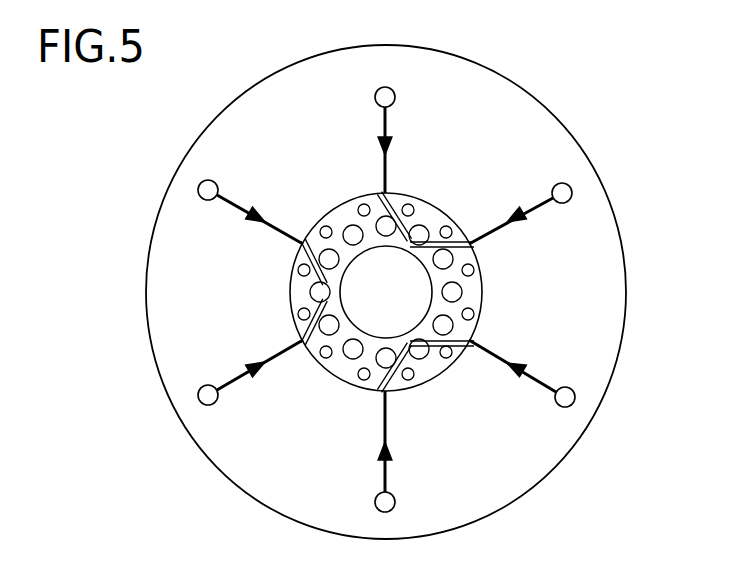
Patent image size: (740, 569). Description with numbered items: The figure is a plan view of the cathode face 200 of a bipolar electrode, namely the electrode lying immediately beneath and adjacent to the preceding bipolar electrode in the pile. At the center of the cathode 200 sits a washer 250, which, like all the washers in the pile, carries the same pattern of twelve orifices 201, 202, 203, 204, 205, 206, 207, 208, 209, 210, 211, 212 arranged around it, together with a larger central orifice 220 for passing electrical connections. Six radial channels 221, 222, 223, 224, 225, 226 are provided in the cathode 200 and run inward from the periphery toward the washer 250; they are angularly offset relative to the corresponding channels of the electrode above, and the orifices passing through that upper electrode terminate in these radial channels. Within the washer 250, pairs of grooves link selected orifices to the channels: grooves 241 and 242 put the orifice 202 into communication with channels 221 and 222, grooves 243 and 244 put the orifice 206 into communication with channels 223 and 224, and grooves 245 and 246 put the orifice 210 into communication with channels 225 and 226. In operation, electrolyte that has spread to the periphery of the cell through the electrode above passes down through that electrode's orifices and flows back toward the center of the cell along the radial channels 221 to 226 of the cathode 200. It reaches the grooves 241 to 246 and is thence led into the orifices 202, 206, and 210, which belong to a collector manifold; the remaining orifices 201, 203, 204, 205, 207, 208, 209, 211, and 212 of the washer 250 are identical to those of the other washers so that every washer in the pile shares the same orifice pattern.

The cathode face 200 is at (185, 155).
The orifice 201 is at (380, 218).
The orifice 202 is at (427, 226).
The orifice 203 is at (452, 258).
The orifice 204 is at (462, 292).
The orifice 205 is at (453, 326).
The orifice 206 is at (427, 360).
The orifice 207 is at (379, 368).
The orifice 208 is at (348, 358).
The orifice 209 is at (313, 352).
The orifice 210 is at (310, 290).
The orifice 211 is at (322, 252).
The orifice 212 is at (350, 228).
The orifice 220 is at (430, 298).
The radial channel 221 is at (388, 128).
The radial channel 222 is at (546, 205).
The radial channel 223 is at (531, 387).
The radial channel 224 is at (390, 478).
The radial channel 225 is at (233, 370).
The radial channel 226 is at (233, 188).
The groove 241 is at (400, 200).
The groove 242 is at (463, 238).
The groove 243 is at (466, 350).
The groove 244 is at (396, 378).
The groove 245 is at (302, 325).
The groove 246 is at (300, 253).
The washer 250 is at (484, 287).